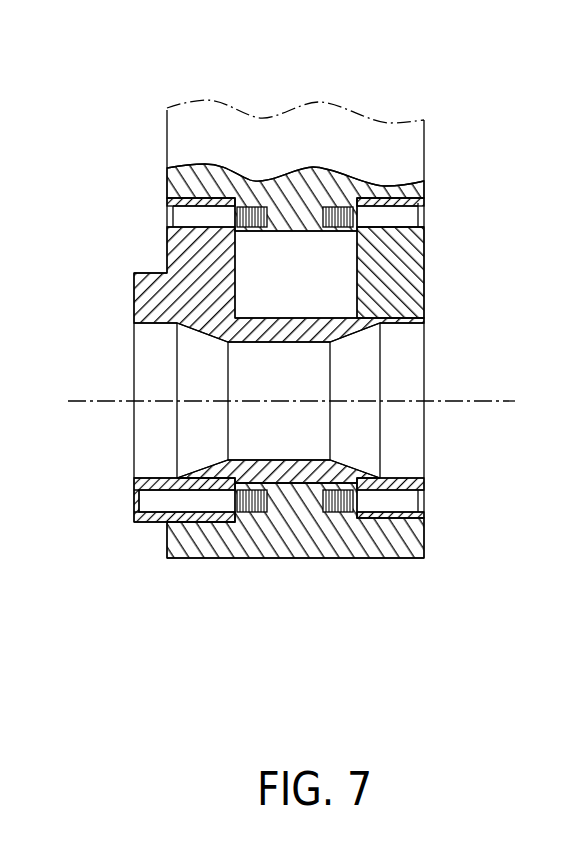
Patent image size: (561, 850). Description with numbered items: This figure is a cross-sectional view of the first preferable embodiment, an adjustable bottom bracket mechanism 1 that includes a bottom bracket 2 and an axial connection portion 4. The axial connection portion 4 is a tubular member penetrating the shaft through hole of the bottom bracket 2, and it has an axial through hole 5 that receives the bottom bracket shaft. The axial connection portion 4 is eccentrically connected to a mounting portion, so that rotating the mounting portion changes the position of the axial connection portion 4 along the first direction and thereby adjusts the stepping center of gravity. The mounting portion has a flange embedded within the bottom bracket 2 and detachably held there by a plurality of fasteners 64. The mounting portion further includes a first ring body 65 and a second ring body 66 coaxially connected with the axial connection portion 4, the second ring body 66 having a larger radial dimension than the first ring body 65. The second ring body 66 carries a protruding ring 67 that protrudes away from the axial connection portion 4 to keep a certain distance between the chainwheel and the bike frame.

The adjustable bottom bracket mechanism 1 is at (99, 102).
The bottom bracket 2 is at (381, 540).
The axial connection portion 4 is at (297, 472).
The axial through hole 5 is at (315, 369).
The fasteners 64 is at (403, 217).
The first ring body 65 is at (407, 272).
The second ring body 66 is at (185, 252).
The protruding ring 67 is at (147, 298).